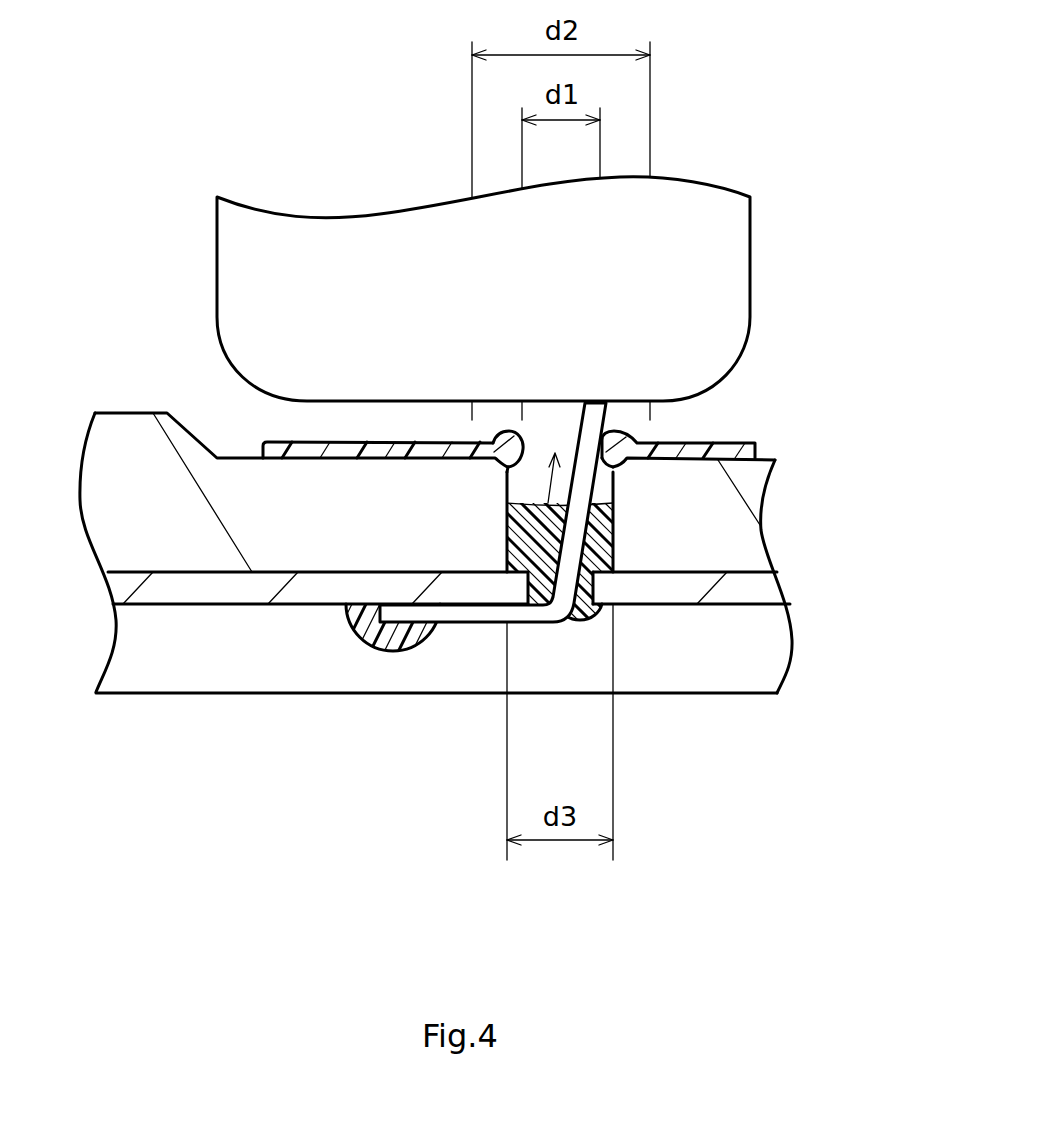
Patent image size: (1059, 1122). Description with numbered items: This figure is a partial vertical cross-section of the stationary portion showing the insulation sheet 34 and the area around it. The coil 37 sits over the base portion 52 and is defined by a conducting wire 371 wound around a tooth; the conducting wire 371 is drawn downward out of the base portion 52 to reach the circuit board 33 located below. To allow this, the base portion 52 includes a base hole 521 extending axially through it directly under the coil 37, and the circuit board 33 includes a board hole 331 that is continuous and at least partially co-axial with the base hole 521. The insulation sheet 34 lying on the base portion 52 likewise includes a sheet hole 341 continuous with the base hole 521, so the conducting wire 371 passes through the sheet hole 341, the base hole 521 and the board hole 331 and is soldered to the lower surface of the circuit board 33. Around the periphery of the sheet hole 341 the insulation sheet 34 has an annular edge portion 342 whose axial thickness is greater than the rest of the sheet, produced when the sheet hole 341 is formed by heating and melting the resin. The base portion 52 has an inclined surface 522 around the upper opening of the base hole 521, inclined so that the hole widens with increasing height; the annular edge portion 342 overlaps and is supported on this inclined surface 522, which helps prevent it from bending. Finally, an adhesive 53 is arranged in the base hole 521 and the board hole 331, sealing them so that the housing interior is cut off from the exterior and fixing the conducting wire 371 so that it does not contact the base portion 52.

The circuit board 33 is at (220, 588).
The board hole 331 is at (568, 619).
The insulation sheet 34 is at (307, 450).
The sheet hole 341 is at (537, 517).
The annular edge portion 342 is at (690, 445).
The coil 37 is at (257, 265).
The conducting wire 371 is at (610, 490).
The base portion 52 is at (320, 538).
The base hole 521 is at (603, 527).
The inclined surface 522 is at (508, 463).
The adhesive 53 is at (640, 573).